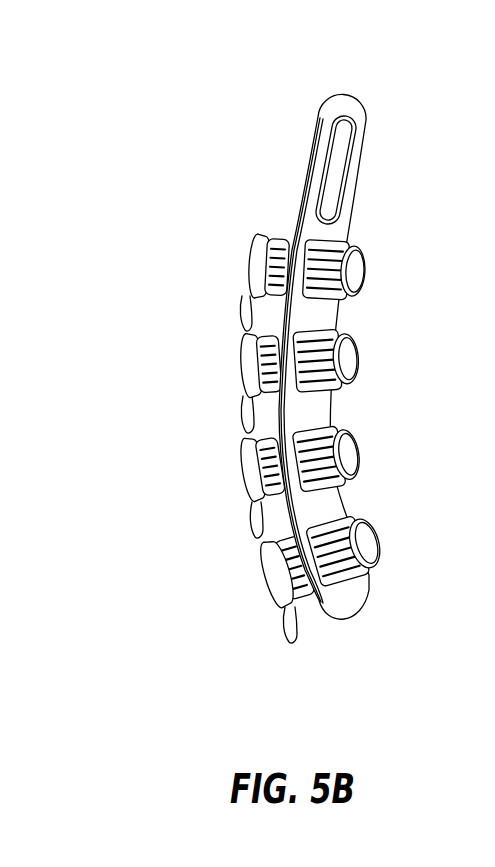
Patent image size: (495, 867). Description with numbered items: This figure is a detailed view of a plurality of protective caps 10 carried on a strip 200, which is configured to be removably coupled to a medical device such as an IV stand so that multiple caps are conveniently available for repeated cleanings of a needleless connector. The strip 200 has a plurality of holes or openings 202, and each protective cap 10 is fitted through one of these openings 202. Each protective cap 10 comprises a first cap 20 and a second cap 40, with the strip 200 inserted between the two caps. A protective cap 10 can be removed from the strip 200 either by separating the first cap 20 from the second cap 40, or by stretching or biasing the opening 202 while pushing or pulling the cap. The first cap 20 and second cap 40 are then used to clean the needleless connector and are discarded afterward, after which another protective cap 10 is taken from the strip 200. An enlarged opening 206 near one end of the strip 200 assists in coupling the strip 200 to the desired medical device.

The protective cap 10 is at (245, 557).
The first cap 20 is at (368, 541).
The second cap 40 is at (259, 584).
The strip 200 is at (363, 110).
The opening 202 is at (293, 243).
The enlarged opening 206 is at (340, 187).